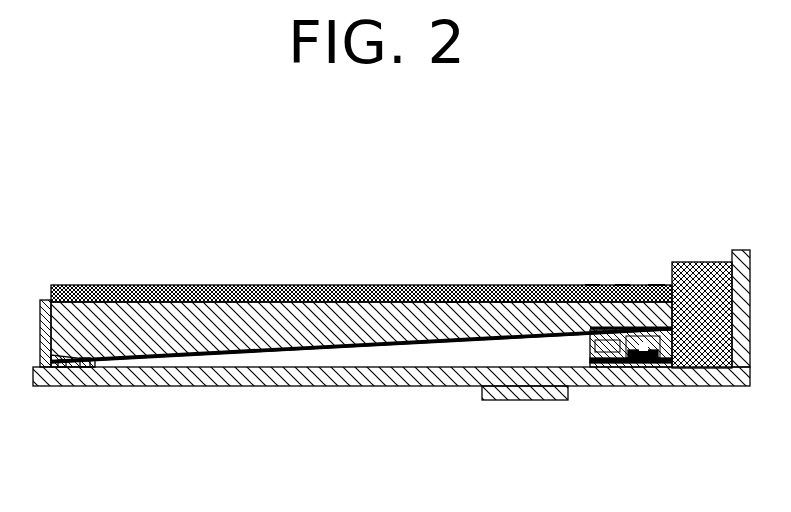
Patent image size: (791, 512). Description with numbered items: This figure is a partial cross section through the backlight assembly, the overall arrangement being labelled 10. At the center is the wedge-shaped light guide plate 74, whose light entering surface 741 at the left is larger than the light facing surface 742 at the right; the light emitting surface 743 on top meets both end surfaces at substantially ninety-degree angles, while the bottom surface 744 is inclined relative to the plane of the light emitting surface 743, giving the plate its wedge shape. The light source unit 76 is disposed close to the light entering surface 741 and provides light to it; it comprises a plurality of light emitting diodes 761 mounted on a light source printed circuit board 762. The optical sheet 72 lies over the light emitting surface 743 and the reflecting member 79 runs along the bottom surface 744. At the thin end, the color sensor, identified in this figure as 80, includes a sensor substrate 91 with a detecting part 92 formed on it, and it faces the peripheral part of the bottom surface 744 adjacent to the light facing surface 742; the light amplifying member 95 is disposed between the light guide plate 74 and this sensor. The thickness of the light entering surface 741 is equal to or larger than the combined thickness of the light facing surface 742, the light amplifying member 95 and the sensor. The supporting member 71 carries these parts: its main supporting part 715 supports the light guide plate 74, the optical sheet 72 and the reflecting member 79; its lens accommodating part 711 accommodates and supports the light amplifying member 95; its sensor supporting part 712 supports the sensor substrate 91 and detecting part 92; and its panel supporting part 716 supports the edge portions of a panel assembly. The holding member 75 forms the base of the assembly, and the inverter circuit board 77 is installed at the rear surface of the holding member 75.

The display device 10 is at (391, 262).
The supporting member 71 is at (711, 320).
The lens accommodating part 711 is at (707, 388).
The sensor supporting part 712 is at (678, 388).
The main supporting part 715 is at (590, 287).
The panel supporting part 716 is at (686, 262).
The optical sheet 72 is at (220, 286).
The light guide plate 74 is at (167, 347).
The light entering surface 741 is at (40, 388).
The light facing surface 742 is at (657, 287).
The light emitting surface 743 is at (455, 300).
The bottom surface 744 is at (508, 300).
The holding member 75 is at (463, 388).
The light source unit 76 is at (55, 462).
The light emitting diodes 761 is at (85, 362).
The light source printed circuit board 762 is at (62, 368).
The inverter circuit board 77 is at (520, 400).
The reflecting member 79 is at (410, 346).
The circuit unit 80 is at (595, 463).
The sensor substrate 91 is at (605, 388).
The detecting part 92 is at (642, 388).
The light amplifying member 95 is at (622, 287).